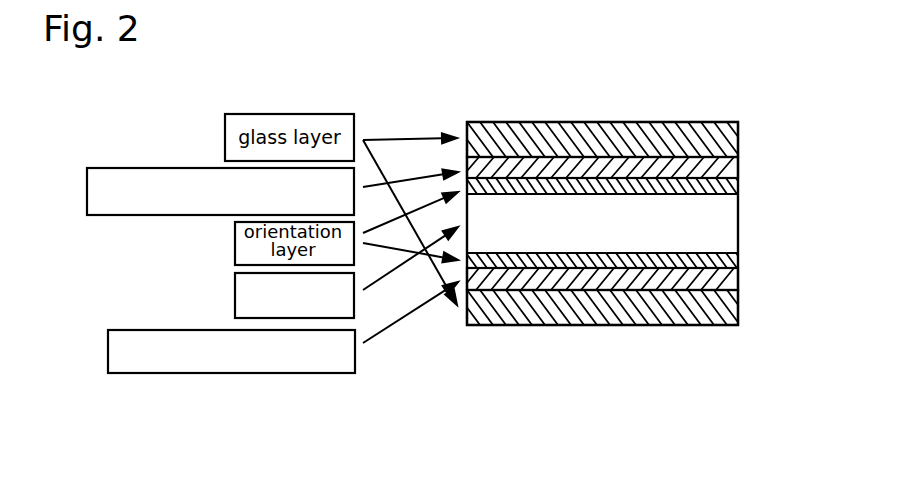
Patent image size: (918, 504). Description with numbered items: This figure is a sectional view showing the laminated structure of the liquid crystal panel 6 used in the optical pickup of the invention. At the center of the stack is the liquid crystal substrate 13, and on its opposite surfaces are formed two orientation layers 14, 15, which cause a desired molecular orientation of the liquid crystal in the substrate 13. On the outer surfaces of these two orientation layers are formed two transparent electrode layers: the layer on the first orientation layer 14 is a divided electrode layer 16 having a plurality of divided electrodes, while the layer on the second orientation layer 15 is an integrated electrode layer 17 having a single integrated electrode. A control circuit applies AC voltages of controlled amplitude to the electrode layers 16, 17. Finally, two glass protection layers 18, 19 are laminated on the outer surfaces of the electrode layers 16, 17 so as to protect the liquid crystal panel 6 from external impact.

The liquid crystal panel 6 is at (663, 221).
The liquid crystal substrate 13 is at (235, 298).
The first orientation layer 14 is at (738, 177).
The second orientation layer 15 is at (738, 255).
The divided electrode layer 16 is at (124, 168).
The integrated electrode layer 17 is at (148, 373).
The glass protection layer 18 is at (738, 137).
The glass protection layer 19 is at (637, 306).